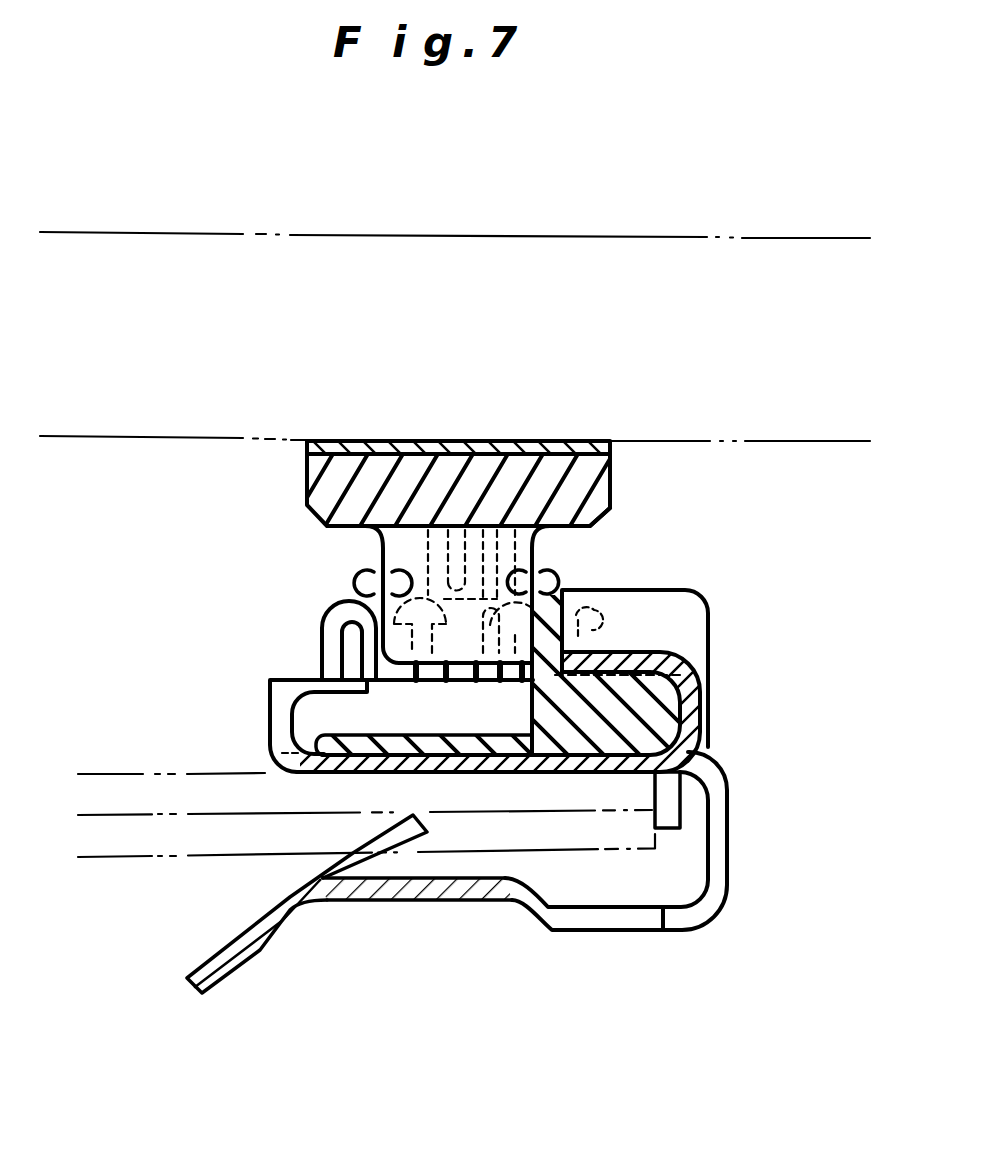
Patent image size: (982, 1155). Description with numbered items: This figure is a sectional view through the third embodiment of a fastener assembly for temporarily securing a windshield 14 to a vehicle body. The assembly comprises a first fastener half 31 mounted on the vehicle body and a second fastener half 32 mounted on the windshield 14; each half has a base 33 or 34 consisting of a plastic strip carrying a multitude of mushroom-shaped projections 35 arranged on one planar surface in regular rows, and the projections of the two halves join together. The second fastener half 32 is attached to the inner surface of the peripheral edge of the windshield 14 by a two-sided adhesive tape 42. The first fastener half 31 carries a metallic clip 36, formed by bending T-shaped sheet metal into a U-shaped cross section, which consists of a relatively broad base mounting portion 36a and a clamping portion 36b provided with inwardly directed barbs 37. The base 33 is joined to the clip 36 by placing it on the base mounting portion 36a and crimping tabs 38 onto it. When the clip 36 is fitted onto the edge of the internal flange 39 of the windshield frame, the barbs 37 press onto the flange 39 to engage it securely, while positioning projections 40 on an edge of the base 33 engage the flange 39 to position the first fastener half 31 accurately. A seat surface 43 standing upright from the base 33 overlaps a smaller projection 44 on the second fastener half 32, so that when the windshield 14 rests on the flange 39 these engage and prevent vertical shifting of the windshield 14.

The windshield 14 is at (611, 237).
The first fastener half 31 is at (730, 670).
The second fastener half 32 is at (640, 498).
The base 33 is at (663, 717).
The base 34 is at (598, 514).
The mushroom-shaped projections 35 is at (322, 632).
The metallic clip 36 is at (703, 847).
The base mounting portion 36a is at (590, 773).
The clamping portion 36b is at (665, 931).
The barbs 37 is at (367, 855).
The tabs 38 is at (613, 650).
The internal flange 39 is at (202, 857).
The positioning projections 40 is at (665, 830).
The two-sided adhesive tape 42 is at (612, 447).
The seat surface 43 is at (550, 585).
The projection 44 is at (413, 566).